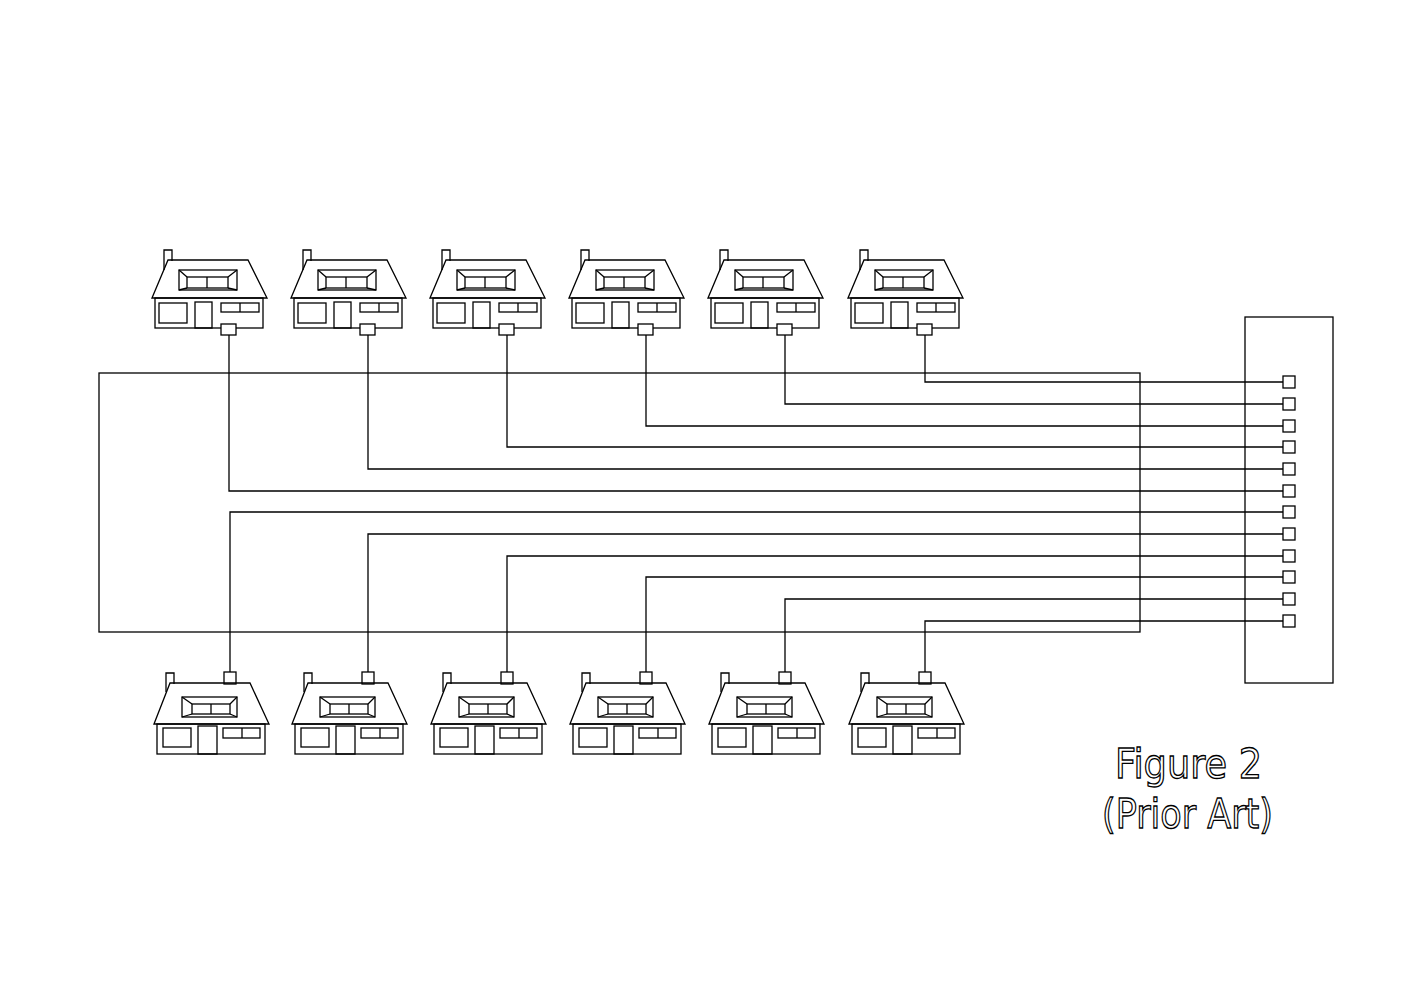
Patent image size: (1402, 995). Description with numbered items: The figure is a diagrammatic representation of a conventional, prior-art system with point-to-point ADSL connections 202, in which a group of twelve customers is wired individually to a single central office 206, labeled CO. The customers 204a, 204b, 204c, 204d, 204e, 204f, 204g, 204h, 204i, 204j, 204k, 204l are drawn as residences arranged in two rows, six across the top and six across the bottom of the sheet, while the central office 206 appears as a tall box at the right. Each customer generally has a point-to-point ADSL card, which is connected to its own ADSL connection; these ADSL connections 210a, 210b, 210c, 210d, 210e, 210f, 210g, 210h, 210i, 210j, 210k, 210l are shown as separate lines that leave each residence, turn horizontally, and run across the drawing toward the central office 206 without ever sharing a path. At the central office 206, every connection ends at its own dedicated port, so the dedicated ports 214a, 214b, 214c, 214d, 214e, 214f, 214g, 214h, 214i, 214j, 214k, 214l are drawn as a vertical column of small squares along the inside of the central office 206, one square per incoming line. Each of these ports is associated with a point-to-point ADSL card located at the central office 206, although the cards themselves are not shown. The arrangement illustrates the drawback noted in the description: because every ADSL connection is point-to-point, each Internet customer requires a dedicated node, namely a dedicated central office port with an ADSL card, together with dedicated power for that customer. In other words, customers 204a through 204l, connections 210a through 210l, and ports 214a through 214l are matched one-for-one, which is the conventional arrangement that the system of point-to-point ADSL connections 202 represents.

The system with point-to-point ADSL connections 202 is at (251, 148).
The customer 204a is at (209, 258).
The customer 204b is at (348, 258).
The customer 204c is at (487, 258).
The customer 204d is at (626, 258).
The customer 204e is at (765, 258).
The customer 204f is at (905, 258).
The customer 204g is at (901, 754).
The customer 204h is at (761, 754).
The customer 204i is at (622, 754).
The customer 204j is at (483, 754).
The customer 204k is at (344, 754).
The customer 204l is at (206, 754).
The central office 206 is at (1348, 294).
The ADSL connection 210a is at (233, 356).
The ADSL connection 210b is at (372, 356).
The ADSL connection 210c is at (511, 356).
The ADSL connection 210d is at (650, 356).
The ADSL connection 210e is at (789, 356).
The ADSL connection 210f is at (929, 356).
The ADSL connection 210g is at (929, 649).
The ADSL connection 210h is at (789, 649).
The ADSL connection 210i is at (650, 649).
The ADSL connection 210j is at (511, 649).
The ADSL connection 210k is at (372, 649).
The ADSL connection 210l is at (234, 649).
The dedicated port 214a is at (1295, 491).
The dedicated port 214b is at (1295, 469).
The dedicated port 214c is at (1295, 447).
The dedicated port 214d is at (1295, 426).
The dedicated port 214e is at (1295, 404).
The dedicated port 214f is at (1295, 382).
The dedicated port 214g is at (1295, 621).
The dedicated port 214h is at (1295, 599).
The dedicated port 214i is at (1295, 577).
The dedicated port 214j is at (1295, 556).
The dedicated port 214k is at (1295, 534).
The dedicated port 214l is at (1295, 512).